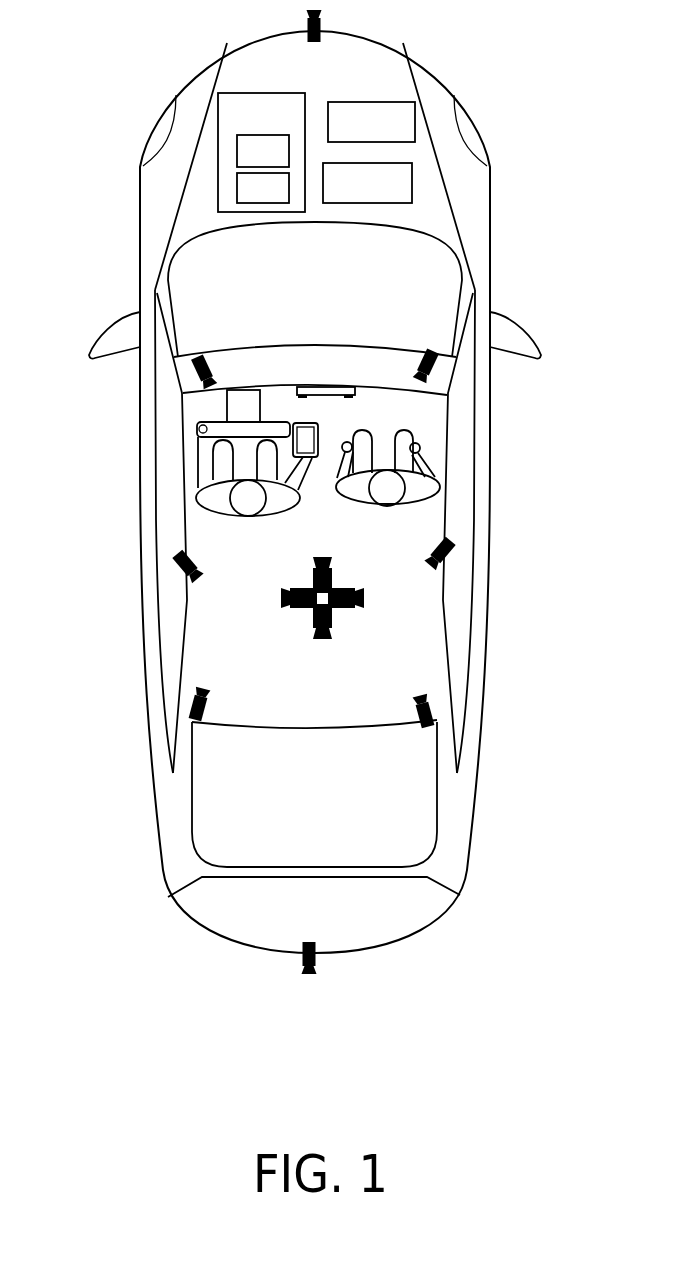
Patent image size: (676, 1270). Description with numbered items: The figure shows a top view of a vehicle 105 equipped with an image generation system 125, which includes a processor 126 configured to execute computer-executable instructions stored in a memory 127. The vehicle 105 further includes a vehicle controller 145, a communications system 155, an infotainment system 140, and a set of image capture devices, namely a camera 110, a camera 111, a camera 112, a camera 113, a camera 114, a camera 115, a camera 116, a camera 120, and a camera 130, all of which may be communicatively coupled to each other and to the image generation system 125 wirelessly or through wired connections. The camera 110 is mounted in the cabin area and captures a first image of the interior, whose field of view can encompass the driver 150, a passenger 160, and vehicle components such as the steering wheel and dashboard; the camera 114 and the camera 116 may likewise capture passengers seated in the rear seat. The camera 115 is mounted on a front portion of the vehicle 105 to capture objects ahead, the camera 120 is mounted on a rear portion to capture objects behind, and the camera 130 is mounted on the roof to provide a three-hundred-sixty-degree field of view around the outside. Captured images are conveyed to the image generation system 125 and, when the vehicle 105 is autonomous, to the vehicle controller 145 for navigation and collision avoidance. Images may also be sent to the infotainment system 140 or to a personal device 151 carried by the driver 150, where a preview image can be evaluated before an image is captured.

The vehicle 105 is at (120, 76).
The camera 110 is at (207, 352).
The camera 111 is at (433, 345).
The camera 112 is at (197, 725).
The camera 113 is at (433, 733).
The camera 114 is at (193, 567).
The camera 115 is at (312, 43).
The camera 116 is at (430, 557).
The camera 120 is at (317, 957).
The image generation system 125 is at (261, 152).
The processor 126 is at (263, 151).
The memory 127 is at (263, 188).
The camera 130 is at (290, 617).
The infotainment system 140 is at (318, 386).
The vehicle controller 145 is at (371, 122).
The driver 150 is at (270, 515).
The personal device 151 is at (319, 440).
The communications system 155 is at (367, 183).
The passenger 160 is at (367, 503).